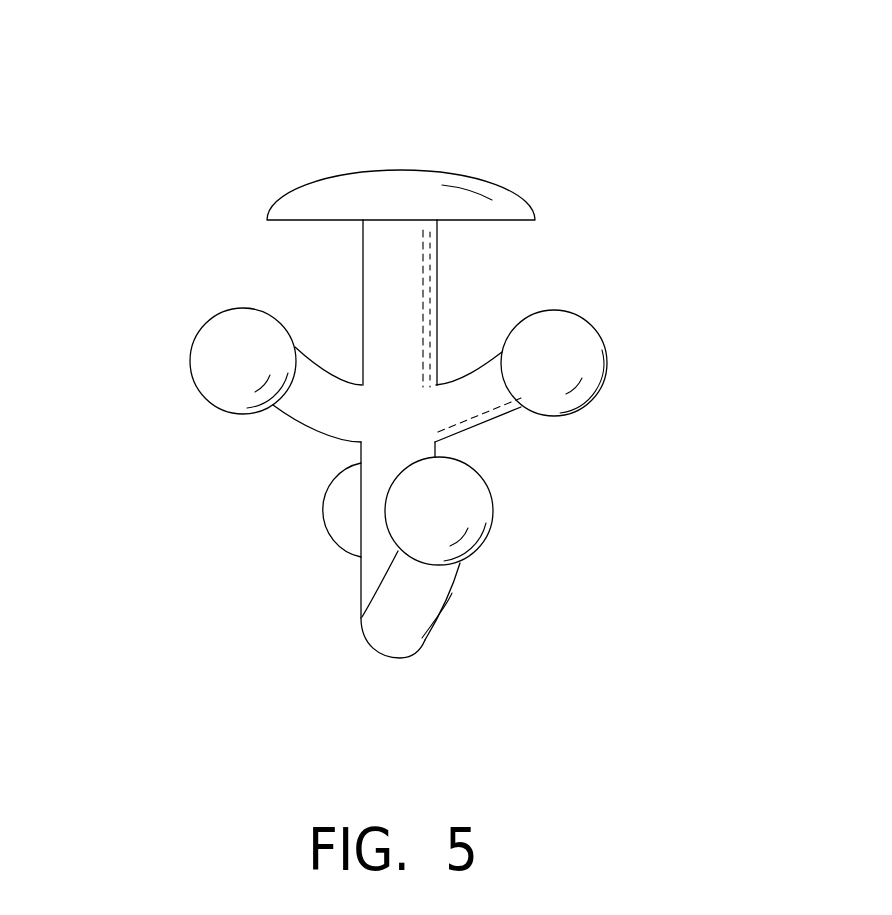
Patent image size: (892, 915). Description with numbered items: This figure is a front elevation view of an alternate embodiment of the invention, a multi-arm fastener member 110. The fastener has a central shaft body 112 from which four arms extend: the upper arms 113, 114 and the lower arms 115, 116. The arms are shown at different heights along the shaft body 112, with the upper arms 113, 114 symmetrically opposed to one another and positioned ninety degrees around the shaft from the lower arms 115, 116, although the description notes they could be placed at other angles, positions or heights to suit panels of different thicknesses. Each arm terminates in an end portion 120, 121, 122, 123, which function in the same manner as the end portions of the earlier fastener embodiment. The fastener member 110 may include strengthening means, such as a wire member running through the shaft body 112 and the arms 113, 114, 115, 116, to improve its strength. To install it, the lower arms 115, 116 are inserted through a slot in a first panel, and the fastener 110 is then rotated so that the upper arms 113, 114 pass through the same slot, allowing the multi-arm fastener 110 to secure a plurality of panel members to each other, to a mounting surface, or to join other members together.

The multi-arm fastener member 110 is at (452, 157).
The shaft body 112 is at (412, 300).
The upper arm 113 is at (322, 410).
The upper arm 114 is at (480, 413).
The lower arm 115 is at (360, 580).
The lower arm 116 is at (437, 638).
The end portion 120 is at (195, 337).
The end portion 121 is at (605, 342).
The end portion 122 is at (322, 522).
The end portion 123 is at (493, 515).